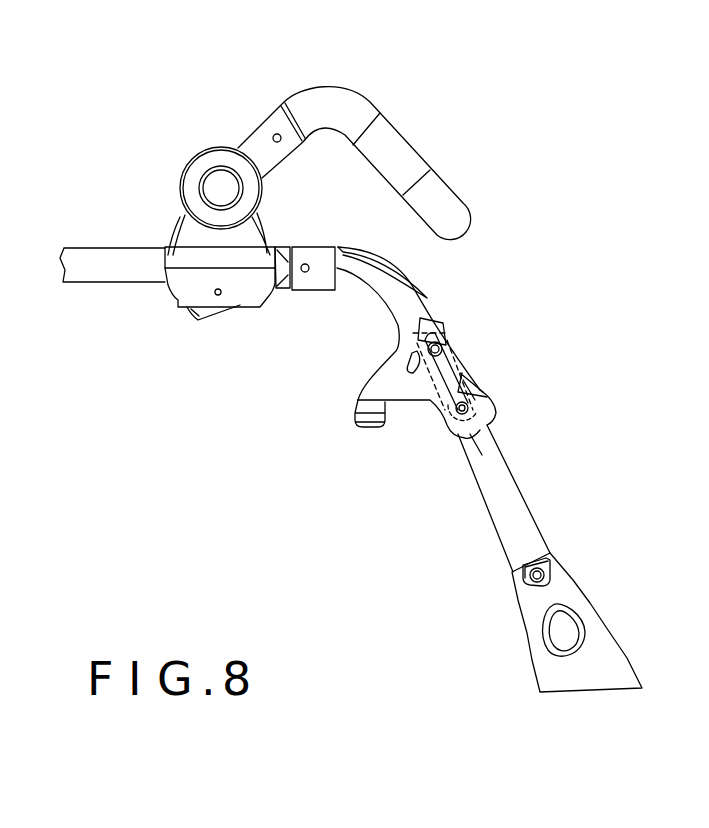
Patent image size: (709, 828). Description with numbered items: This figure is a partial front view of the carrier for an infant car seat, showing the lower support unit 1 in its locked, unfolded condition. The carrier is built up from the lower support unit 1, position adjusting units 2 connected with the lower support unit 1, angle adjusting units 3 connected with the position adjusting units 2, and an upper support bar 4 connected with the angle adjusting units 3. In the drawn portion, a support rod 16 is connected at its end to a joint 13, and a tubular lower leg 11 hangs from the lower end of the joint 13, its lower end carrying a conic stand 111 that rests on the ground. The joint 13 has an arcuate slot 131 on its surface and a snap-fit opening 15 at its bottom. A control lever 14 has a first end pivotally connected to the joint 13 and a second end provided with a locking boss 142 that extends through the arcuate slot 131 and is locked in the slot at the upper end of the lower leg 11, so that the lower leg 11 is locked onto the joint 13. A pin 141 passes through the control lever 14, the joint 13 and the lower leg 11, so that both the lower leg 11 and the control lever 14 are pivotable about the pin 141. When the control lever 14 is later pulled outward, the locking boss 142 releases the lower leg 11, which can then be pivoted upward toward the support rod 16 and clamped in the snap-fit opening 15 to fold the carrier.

The lower support unit 1 is at (491, 469).
The position adjusting unit 2 is at (209, 326).
The angle adjusting unit 3 is at (203, 147).
The upper support bar 4 is at (403, 137).
The lower leg 11 is at (507, 488).
The joint 13 is at (395, 267).
The control lever 14 is at (438, 325).
The snap-fit opening 15 is at (368, 430).
The support rod 16 is at (105, 265).
The conic stand 111 is at (527, 600).
The arcuate slot 131 is at (412, 367).
The pin 141 is at (475, 397).
The locking boss 142 is at (440, 349).